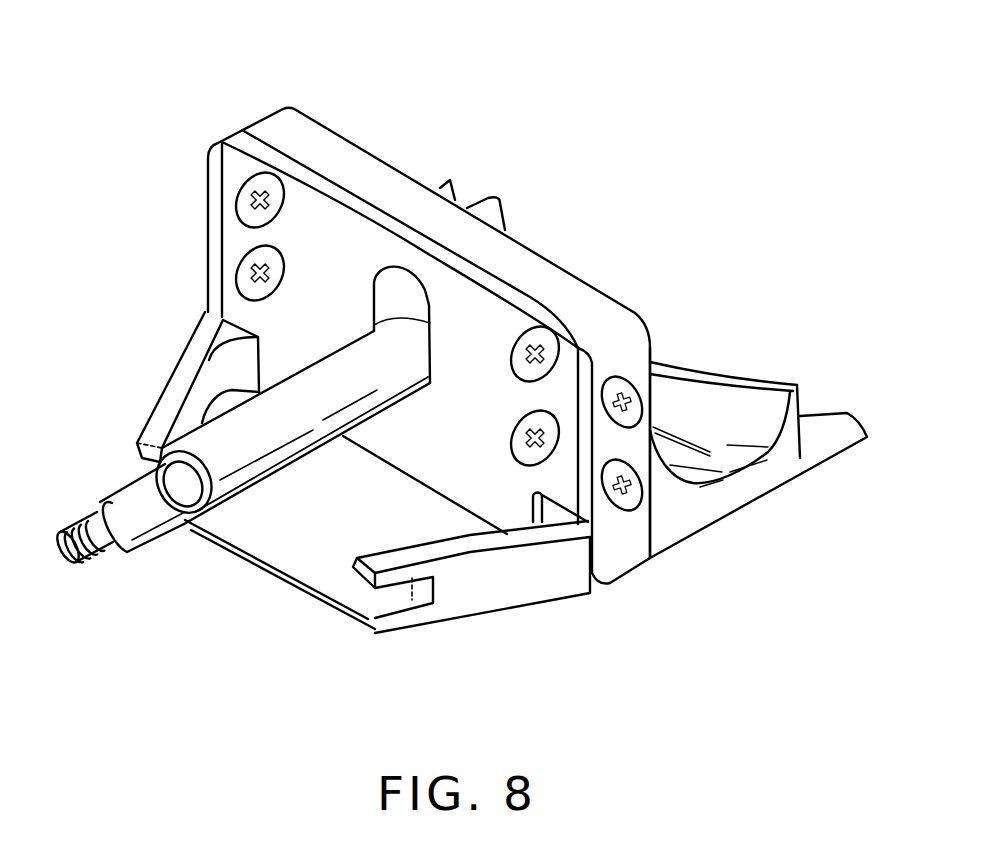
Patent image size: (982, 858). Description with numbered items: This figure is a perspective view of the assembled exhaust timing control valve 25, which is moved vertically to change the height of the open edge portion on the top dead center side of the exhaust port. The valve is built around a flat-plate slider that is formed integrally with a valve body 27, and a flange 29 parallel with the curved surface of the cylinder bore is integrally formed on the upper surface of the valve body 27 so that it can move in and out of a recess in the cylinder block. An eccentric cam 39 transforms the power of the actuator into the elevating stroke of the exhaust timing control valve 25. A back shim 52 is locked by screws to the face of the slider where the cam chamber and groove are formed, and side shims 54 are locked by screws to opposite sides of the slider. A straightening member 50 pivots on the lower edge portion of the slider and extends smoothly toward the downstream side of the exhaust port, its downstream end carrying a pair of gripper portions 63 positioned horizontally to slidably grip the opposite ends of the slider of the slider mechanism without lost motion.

The exhaust timing control valve 25 is at (258, 118).
The valve body 27 is at (490, 202).
The flange 29 is at (748, 413).
The eccentric cam 39 is at (236, 406).
The straightening member 50 is at (247, 562).
The back shim 52 is at (336, 221).
The side shims 54 is at (630, 348).
The gripper portions 63 is at (395, 605).